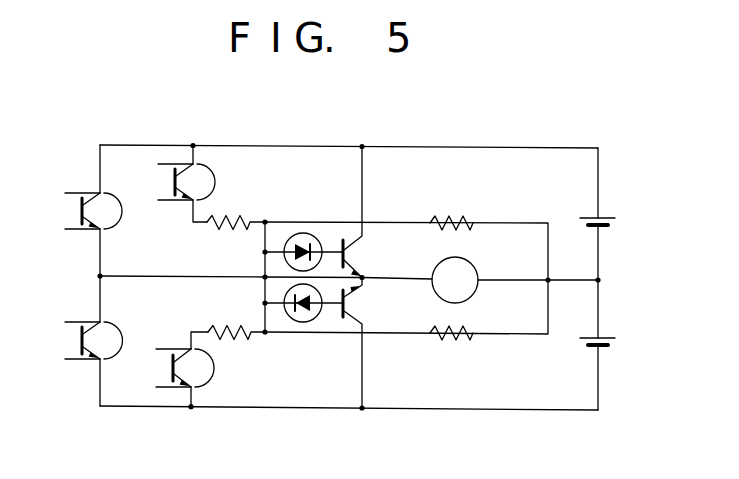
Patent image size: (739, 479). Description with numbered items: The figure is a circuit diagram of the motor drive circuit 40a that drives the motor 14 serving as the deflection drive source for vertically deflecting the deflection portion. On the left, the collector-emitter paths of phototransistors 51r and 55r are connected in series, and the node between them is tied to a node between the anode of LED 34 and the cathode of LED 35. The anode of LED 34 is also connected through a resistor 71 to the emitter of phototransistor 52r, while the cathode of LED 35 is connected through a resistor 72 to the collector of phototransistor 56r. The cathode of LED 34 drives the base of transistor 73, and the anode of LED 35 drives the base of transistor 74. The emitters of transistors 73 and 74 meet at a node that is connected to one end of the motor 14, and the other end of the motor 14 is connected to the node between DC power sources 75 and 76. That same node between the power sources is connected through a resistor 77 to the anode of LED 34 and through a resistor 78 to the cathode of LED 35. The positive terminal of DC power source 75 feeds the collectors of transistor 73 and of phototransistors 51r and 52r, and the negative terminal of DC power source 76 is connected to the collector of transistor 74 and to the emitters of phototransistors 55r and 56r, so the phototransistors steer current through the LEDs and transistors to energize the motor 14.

The motor drive circuit 40a is at (491, 135).
The phototransistor 51r is at (72, 212).
The phototransistor 52r is at (167, 184).
The phototransistor 55r is at (71, 346).
The phototransistor 56r is at (160, 368).
The resistor 71 is at (223, 218).
The resistor 72 is at (230, 338).
The LED 34 is at (303, 237).
The LED 35 is at (300, 322).
The transistor 73 is at (355, 249).
The transistor 74 is at (355, 306).
The resistor 77 is at (450, 215).
The resistor 78 is at (453, 343).
The motor 14 is at (470, 270).
The DC power source 75 is at (613, 209).
The DC power source 76 is at (608, 348).